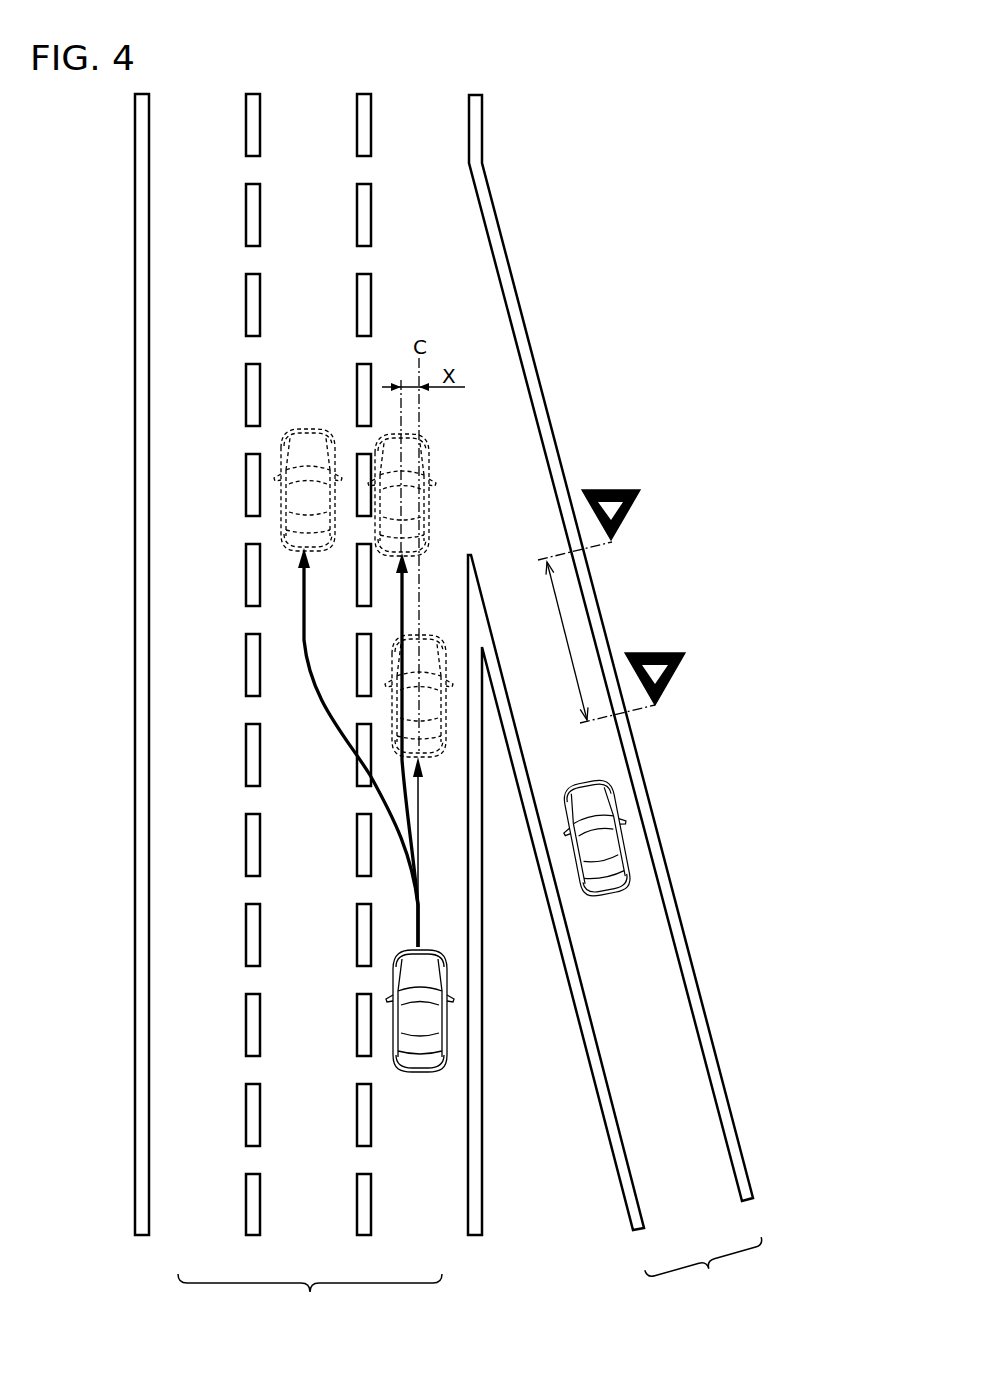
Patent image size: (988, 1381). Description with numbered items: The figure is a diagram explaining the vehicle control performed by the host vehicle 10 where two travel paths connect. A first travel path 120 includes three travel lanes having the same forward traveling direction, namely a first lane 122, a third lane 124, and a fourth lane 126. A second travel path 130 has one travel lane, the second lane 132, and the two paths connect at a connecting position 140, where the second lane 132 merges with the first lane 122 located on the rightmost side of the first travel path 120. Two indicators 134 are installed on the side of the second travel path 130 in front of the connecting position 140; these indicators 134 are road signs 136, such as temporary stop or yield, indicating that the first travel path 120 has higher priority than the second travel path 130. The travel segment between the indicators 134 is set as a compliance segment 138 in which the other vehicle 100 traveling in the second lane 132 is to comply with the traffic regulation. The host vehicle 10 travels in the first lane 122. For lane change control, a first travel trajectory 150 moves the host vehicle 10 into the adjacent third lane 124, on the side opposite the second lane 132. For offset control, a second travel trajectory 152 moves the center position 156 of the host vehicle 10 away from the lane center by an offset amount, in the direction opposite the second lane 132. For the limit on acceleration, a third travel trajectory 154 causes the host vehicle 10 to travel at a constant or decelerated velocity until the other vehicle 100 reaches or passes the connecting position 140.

The host vehicle 10 is at (282, 445).
The other vehicle 100 is at (603, 793).
The first travel path 120 is at (310, 1299).
The first lane 122 is at (424, 1205).
The third lane 124 is at (313, 1205).
The fourth lane 126 is at (206, 1205).
The second travel path 130 is at (617, 931).
The second lane 132 is at (693, 1187).
The indicator 134 is at (676, 576).
The road sign 136 is at (617, 490).
The compliance segment 138 is at (567, 650).
The connecting position 140 is at (538, 285).
The first travel trajectory 150 is at (318, 693).
The second travel trajectory 152 is at (385, 795).
The third travel trajectory 154 is at (423, 787).
The center position 156 is at (400, 405).